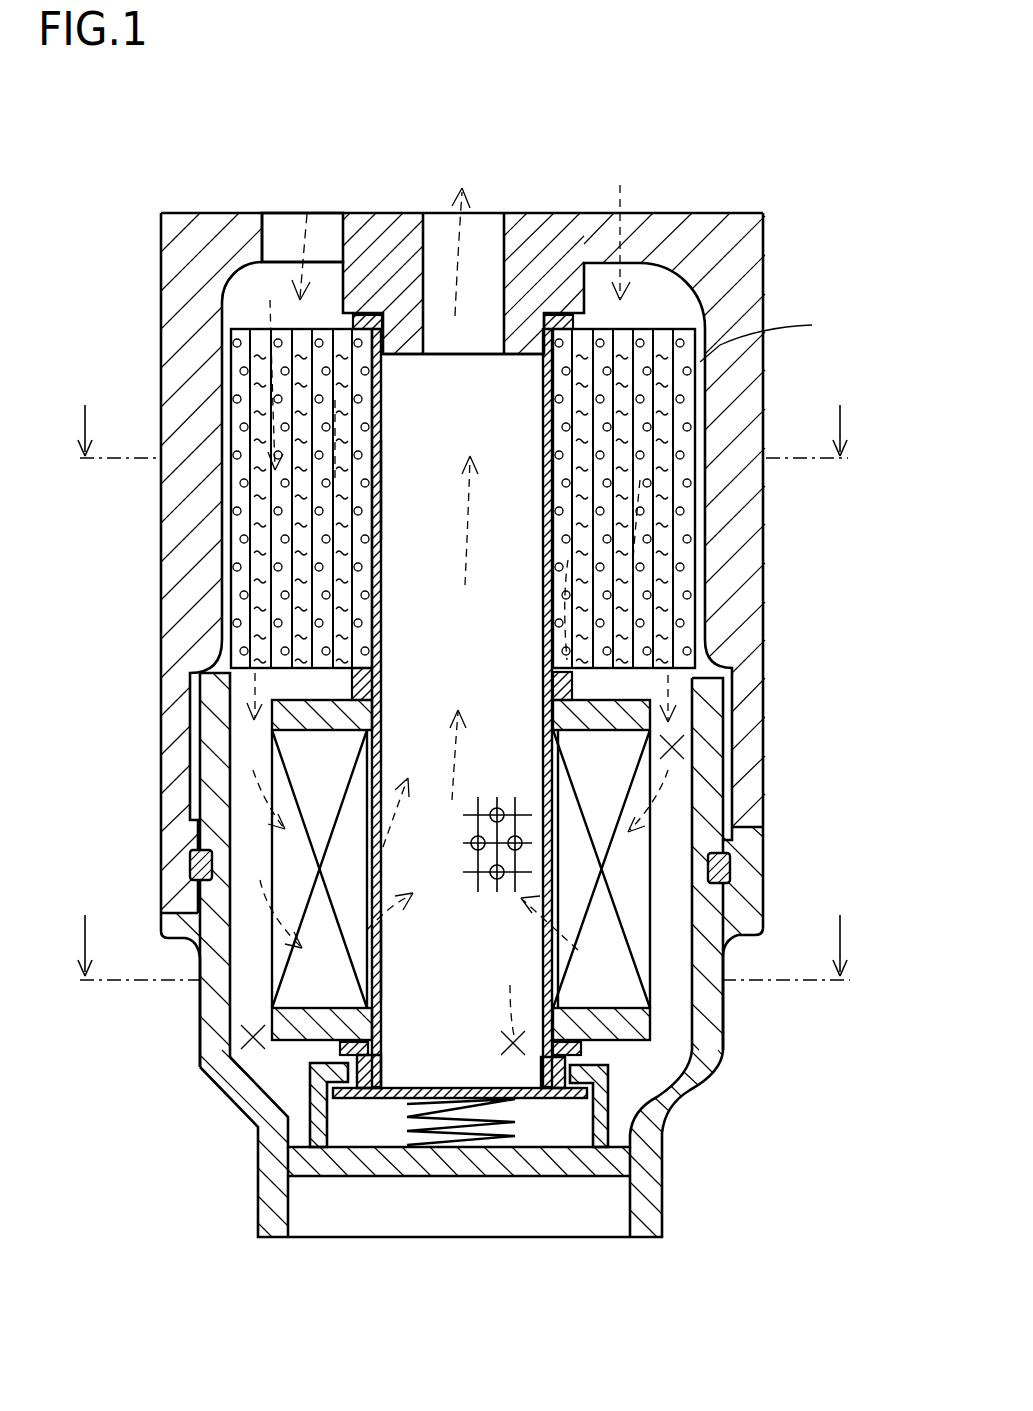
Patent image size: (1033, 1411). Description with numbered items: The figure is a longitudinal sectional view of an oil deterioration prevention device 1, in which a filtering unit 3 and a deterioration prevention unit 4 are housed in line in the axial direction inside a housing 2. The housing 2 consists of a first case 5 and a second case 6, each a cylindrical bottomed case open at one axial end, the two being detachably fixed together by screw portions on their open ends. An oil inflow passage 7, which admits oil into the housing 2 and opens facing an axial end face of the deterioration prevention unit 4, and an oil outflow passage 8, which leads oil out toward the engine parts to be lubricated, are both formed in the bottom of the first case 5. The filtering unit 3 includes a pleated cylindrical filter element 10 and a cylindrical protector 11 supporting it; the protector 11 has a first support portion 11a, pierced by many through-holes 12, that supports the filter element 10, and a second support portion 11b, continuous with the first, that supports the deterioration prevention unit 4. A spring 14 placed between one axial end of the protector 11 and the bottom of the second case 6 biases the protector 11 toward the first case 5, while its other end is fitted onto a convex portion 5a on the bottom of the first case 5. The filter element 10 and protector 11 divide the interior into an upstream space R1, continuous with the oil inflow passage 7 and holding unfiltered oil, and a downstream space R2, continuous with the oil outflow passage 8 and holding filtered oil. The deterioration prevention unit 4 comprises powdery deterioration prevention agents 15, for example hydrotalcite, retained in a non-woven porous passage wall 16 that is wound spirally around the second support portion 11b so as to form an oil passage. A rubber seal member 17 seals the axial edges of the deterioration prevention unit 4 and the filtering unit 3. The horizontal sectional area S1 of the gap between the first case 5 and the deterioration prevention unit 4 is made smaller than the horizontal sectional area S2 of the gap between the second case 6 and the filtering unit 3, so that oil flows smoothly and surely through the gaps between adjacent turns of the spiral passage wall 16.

The oil deterioration prevention device 1 is at (722, 172).
The housing 2 is at (768, 274).
The filtering unit 3 is at (265, 975).
The deterioration prevention unit 4 is at (207, 656).
The first case 5 is at (175, 322).
The convex portion 5a is at (520, 333).
The second case 6 is at (223, 1085).
The oil inflow passage 7 is at (270, 255).
The oil outflow passage 8 is at (435, 212).
The filter element 10 is at (290, 848).
The protector 11 is at (372, 1099).
The first support portion 11a is at (383, 960).
The second support portion 11b is at (383, 493).
The through-holes 12 is at (372, 822).
The spring 14 is at (430, 1134).
The deterioration prevention agents 15 is at (235, 595).
The passage wall 16 is at (700, 585).
The seal member 17 is at (368, 314).
The horizontal sectional area S1 is at (700, 362).
The horizontal sectional area S2 is at (680, 748).
The upstream space R1 is at (248, 1040).
The downstream space R2 is at (514, 1050).